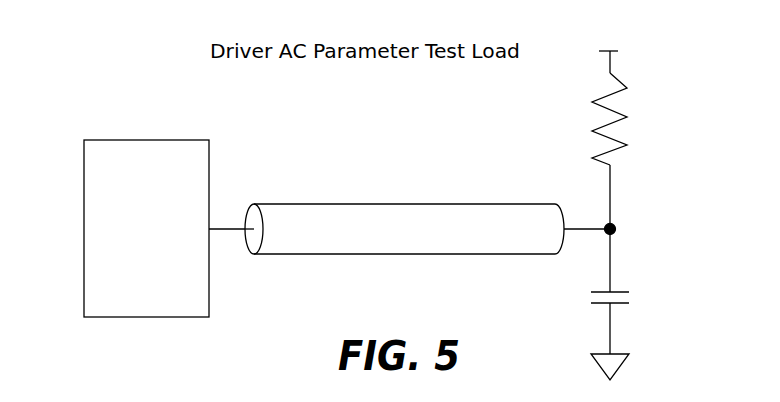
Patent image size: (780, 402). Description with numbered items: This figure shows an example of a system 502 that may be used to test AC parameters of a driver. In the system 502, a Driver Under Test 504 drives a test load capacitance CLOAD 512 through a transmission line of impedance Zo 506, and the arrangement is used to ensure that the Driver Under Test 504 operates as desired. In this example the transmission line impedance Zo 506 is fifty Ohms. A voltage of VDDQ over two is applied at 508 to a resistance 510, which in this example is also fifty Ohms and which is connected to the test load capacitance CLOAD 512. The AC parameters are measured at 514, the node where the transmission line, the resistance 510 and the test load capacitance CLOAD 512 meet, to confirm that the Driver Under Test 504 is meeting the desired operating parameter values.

The system 502 is at (158, 108).
The Driver Under Test 504 is at (146, 228).
The transmission line of impedance Zo 506 is at (406, 203).
The voltage VDDQ/2 application point 508 is at (646, 40).
The resistance 510 is at (681, 118).
The test load capacitance CLOAD 512 is at (688, 297).
The measurement point 514 is at (616, 228).